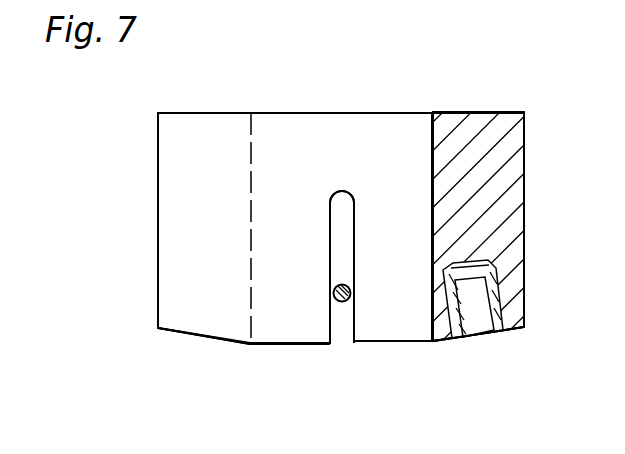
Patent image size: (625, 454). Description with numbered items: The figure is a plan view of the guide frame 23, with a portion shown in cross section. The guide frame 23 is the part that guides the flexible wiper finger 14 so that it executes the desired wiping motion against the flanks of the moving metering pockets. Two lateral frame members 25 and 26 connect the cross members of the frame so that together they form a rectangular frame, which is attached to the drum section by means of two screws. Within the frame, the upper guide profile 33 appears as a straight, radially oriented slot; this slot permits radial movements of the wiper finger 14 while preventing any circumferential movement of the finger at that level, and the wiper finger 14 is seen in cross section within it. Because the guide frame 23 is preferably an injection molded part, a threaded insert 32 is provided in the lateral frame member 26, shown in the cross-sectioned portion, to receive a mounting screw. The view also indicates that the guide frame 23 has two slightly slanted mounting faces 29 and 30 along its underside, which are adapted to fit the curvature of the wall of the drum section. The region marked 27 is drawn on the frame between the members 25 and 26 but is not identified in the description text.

The guide frame 23 is at (272, 104).
The lateral frame member 25 is at (188, 209).
The lateral frame member 26 is at (478, 128).
The second body section 27 is at (359, 140).
The slanted mounting face 29 is at (210, 345).
The upper guide profile 33 is at (343, 242).
The wiper finger 14 is at (342, 302).
The threaded insert 32 is at (472, 322).
The slanted mounting face 30 is at (517, 342).